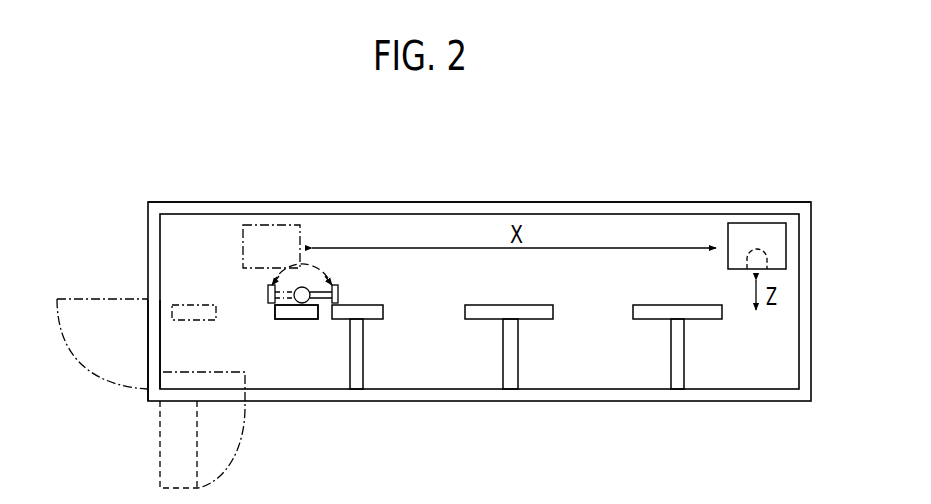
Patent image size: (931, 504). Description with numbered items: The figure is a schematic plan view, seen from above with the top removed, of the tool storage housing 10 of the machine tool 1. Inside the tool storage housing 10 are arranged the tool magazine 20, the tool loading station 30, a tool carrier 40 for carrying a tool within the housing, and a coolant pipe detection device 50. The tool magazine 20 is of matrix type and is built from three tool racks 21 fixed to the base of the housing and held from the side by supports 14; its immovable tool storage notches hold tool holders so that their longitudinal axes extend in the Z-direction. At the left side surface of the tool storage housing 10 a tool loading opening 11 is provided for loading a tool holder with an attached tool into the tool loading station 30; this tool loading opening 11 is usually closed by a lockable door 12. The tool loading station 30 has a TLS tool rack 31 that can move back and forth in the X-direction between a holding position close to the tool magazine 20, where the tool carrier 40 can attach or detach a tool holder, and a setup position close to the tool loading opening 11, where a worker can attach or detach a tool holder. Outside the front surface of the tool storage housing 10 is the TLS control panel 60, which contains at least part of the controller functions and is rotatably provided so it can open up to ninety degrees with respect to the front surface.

The machine tool 1 is at (649, 187).
The tool storage housing 10 is at (402, 201).
The tool loading opening 11 is at (157, 353).
The lockable door 12 is at (82, 299).
The support 14 is at (508, 368).
The tool magazine 20 is at (498, 320).
The tool rack 21 is at (535, 318).
The tool loading station 30 is at (245, 335).
The TLS tool rack 31 is at (195, 305).
The tool carrier 40 is at (765, 238).
The coolant pipe detection device 50 is at (302, 287).
The TLS control panel 60 is at (160, 463).